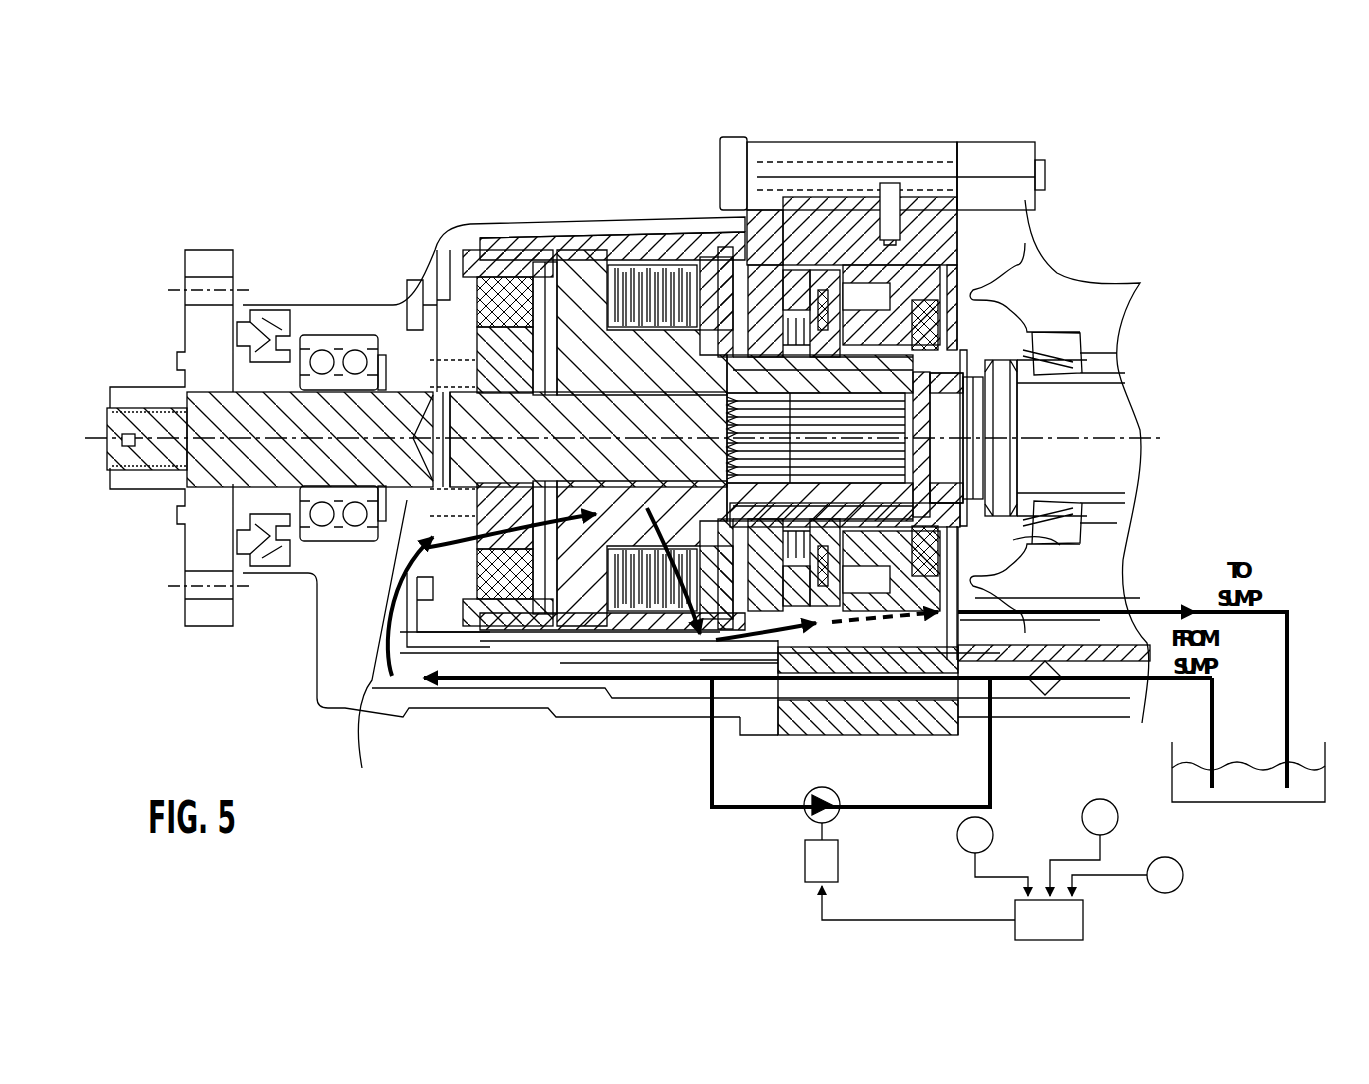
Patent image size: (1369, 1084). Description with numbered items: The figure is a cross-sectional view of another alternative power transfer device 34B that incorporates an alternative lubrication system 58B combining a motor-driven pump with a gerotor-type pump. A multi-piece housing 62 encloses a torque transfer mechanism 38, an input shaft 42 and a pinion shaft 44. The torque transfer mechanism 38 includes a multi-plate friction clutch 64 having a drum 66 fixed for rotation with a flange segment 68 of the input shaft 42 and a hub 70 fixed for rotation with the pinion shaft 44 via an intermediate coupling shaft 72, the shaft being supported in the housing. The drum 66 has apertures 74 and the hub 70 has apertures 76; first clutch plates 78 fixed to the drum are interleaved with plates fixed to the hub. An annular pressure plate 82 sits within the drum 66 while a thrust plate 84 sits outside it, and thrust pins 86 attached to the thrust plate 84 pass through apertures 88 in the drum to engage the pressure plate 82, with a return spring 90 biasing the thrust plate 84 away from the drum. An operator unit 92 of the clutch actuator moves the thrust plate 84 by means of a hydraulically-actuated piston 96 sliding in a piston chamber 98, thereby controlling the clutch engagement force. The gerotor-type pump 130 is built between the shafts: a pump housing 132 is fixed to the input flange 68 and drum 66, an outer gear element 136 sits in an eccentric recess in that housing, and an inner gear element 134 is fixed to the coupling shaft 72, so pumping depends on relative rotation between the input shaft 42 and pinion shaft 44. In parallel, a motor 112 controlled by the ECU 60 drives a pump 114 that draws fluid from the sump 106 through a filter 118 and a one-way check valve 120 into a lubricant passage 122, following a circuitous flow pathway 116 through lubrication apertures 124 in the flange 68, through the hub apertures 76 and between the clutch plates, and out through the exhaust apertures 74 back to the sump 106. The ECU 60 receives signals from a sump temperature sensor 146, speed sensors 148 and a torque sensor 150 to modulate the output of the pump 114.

The power transfer device 34B is at (405, 163).
The outer gear element 136 is at (497, 322).
The gerotor-type pump 130 is at (545, 300).
The housing 62 is at (468, 230).
The pump housing 132 is at (518, 275).
The flange segment 68 is at (447, 340).
The lubrication apertures 124 is at (443, 343).
The multi-plate friction clutch 64 is at (220, 262).
The apertures 74 is at (663, 257).
The first clutch plates 78 is at (620, 268).
The drum 66 is at (718, 250).
The pressure plate 82 is at (757, 275).
The apertures 88 is at (778, 300).
The thrust pins 86 is at (795, 320).
The thrust plate 84 is at (800, 340).
The return spring 90 is at (812, 350).
The operator unit 92 is at (966, 243).
The pinion shaft 44 is at (1140, 412).
The input shaft 42 is at (113, 455).
The intermediate coupling shaft 72 is at (332, 500).
The inner gear element 134 is at (462, 455).
The hub 70 is at (612, 345).
The apertures 76 is at (700, 393).
The piston 96 is at (975, 590).
The piston chamber 98 is at (970, 634).
The lubricant passage 122 is at (375, 648).
The torque transfer mechanism 38 is at (630, 693).
The circuitous flow pathway 116 is at (670, 693).
The one-way check valve 120 is at (808, 720).
The pump 114 is at (835, 792).
The motor 112 is at (838, 868).
The torque sensor 150 is at (958, 834).
The sump temperature sensor 146 is at (1083, 816).
The speed sensors 148 is at (1180, 862).
The sump 106 is at (1312, 795).
The ECU 60 is at (1083, 927).
The filter 118 is at (1050, 697).
The lubrication system 58B is at (658, 812).